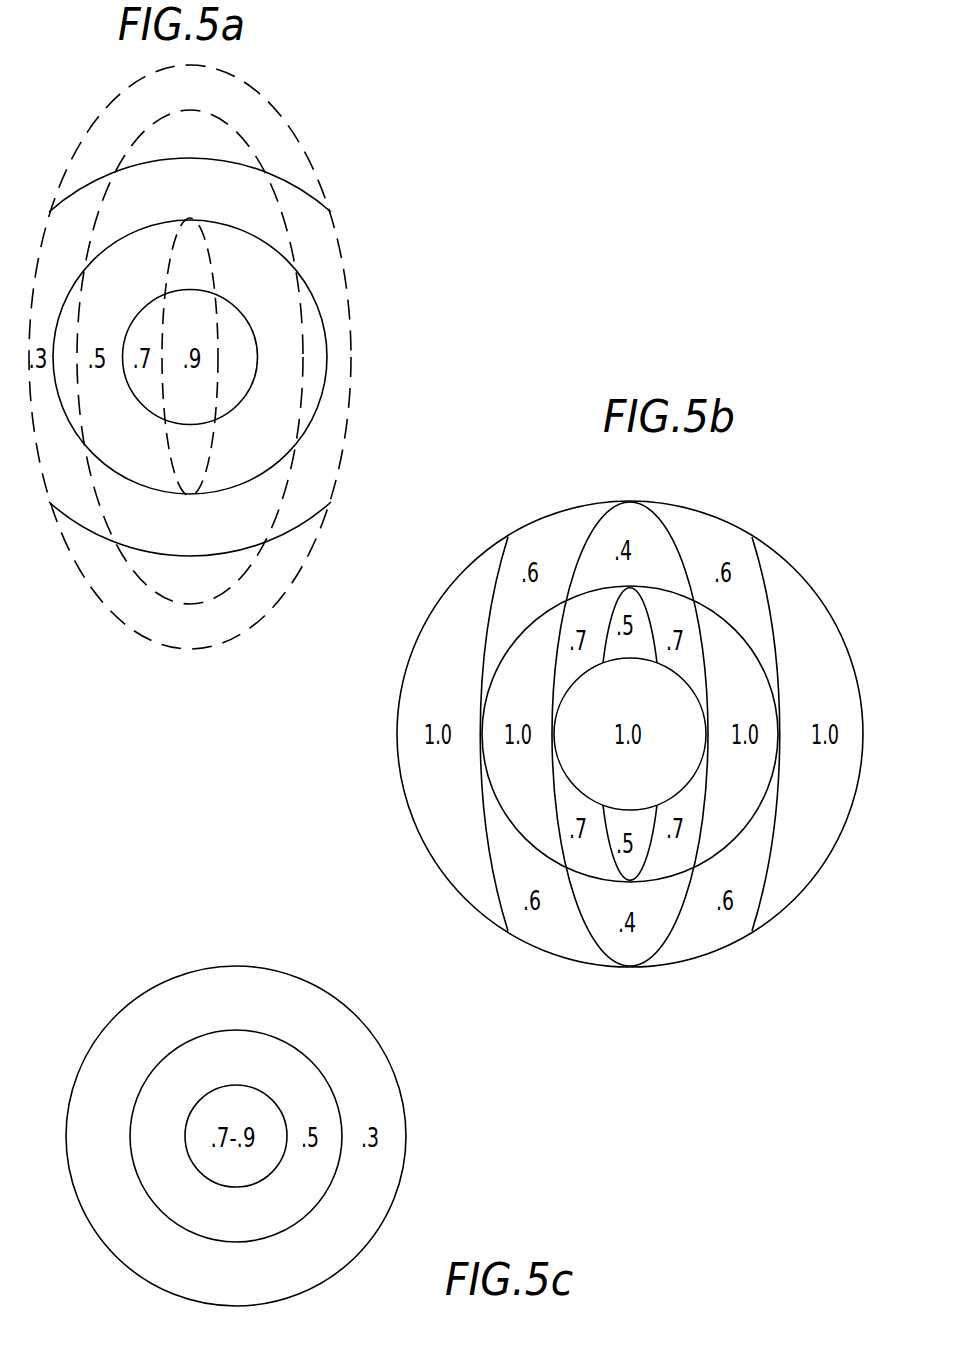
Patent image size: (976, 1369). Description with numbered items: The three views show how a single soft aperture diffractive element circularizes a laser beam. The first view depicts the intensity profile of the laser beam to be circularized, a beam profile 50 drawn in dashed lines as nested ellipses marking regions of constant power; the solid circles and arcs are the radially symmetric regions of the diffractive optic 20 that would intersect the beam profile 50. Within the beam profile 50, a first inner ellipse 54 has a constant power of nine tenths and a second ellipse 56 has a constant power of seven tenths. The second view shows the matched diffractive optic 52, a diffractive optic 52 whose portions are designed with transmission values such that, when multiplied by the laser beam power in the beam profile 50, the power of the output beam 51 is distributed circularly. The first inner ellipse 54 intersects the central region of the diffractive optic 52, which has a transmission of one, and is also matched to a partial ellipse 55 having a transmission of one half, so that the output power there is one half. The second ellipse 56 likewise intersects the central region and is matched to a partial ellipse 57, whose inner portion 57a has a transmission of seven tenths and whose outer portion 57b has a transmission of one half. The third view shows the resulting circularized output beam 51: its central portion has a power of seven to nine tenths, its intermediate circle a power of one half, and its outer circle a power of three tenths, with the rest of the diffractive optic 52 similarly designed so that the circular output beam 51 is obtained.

In FIG. 5a, the diffractive optic 20 is at (333, 210).
In FIG. 5a, the beam profile 50 is at (322, 177).
In FIG. 5c, the output beam 51 is at (383, 1050).
In FIG. 5b, the matched diffractive optic 52 is at (792, 550).
In FIG. 5a, the first inner ellipse 54 is at (215, 275).
In FIG. 5b, the partial ellipse 55 is at (630, 585).
In FIG. 5a, the second ellipse 56 is at (229, 191).
In FIG. 5b, the partial ellipse 57 is at (693, 598).
In FIG. 5b, the inner portion 57a is at (664, 942).
In FIG. 5b, the outer portion 57b is at (663, 523).